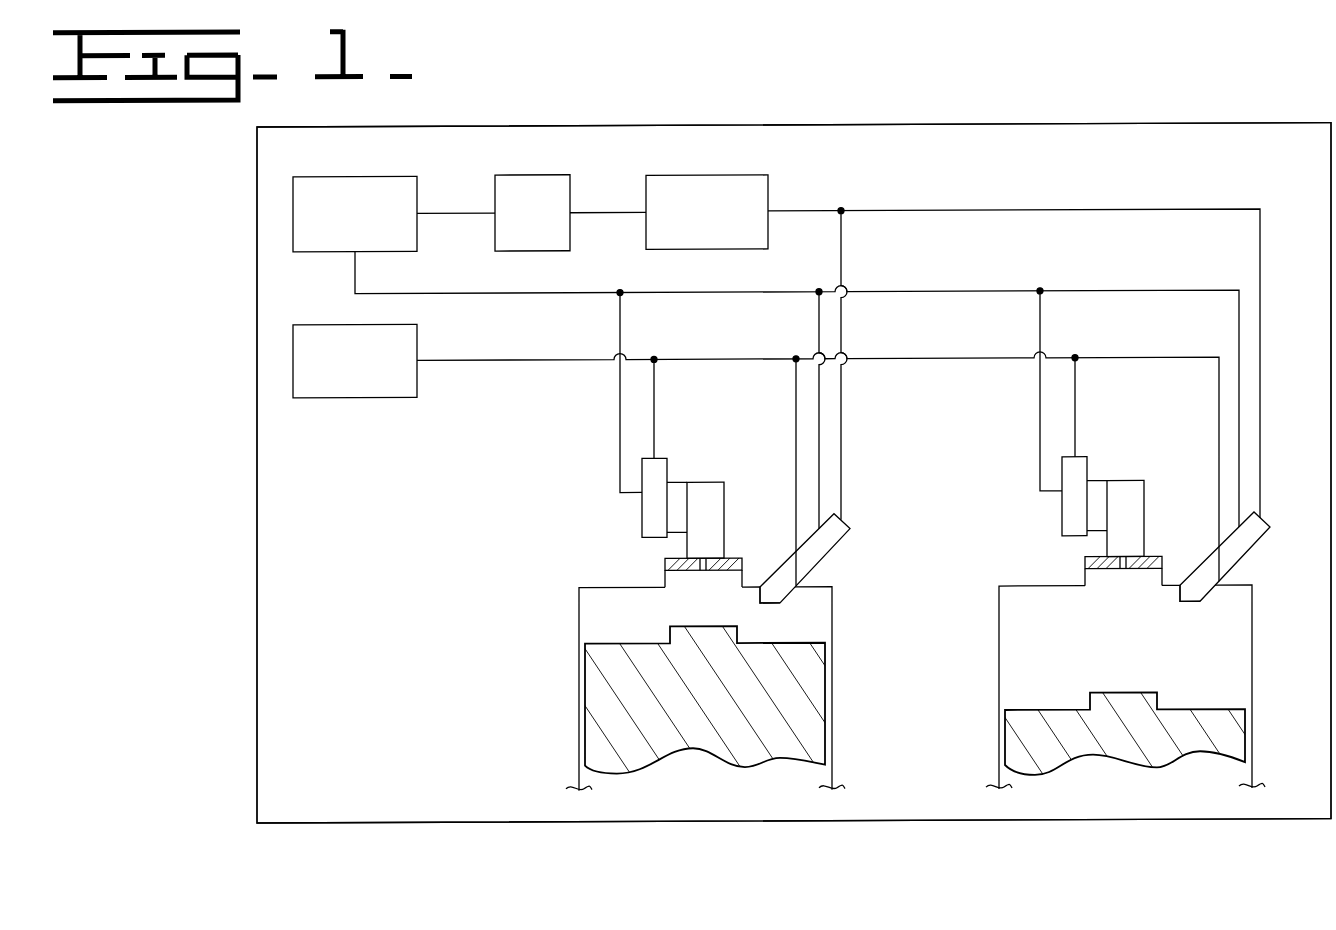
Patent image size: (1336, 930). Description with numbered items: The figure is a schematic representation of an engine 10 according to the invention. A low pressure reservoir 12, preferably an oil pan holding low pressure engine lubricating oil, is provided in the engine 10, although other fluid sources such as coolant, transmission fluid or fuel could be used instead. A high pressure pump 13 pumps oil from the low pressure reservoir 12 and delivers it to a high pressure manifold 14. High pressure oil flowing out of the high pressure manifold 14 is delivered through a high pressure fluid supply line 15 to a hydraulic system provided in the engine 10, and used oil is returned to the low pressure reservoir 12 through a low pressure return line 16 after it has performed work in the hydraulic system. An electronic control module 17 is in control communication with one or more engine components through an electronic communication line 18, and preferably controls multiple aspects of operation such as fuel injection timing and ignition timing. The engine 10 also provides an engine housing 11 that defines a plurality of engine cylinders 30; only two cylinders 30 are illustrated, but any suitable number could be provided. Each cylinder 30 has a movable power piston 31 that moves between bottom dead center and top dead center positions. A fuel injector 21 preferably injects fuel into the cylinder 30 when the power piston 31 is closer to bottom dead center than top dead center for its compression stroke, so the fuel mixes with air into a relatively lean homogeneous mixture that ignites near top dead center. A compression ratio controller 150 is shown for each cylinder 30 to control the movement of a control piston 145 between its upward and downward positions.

The engine 10 is at (933, 846).
The engine housing 11 is at (557, 824).
The low pressure reservoir 12 is at (318, 254).
The high pressure pump 13 is at (495, 235).
The high pressure manifold 14 is at (646, 228).
The high pressure fluid supply line 15 is at (931, 213).
The low pressure return line 16 is at (913, 296).
The electronic control module 17 is at (370, 399).
The electronic communication line 18 is at (913, 363).
The fuel injector 21 is at (832, 558).
The engine cylinder 30 is at (832, 620).
The power piston 31 is at (825, 692).
The control piston 145 is at (673, 574).
The compression ratio controller 150 is at (641, 518).